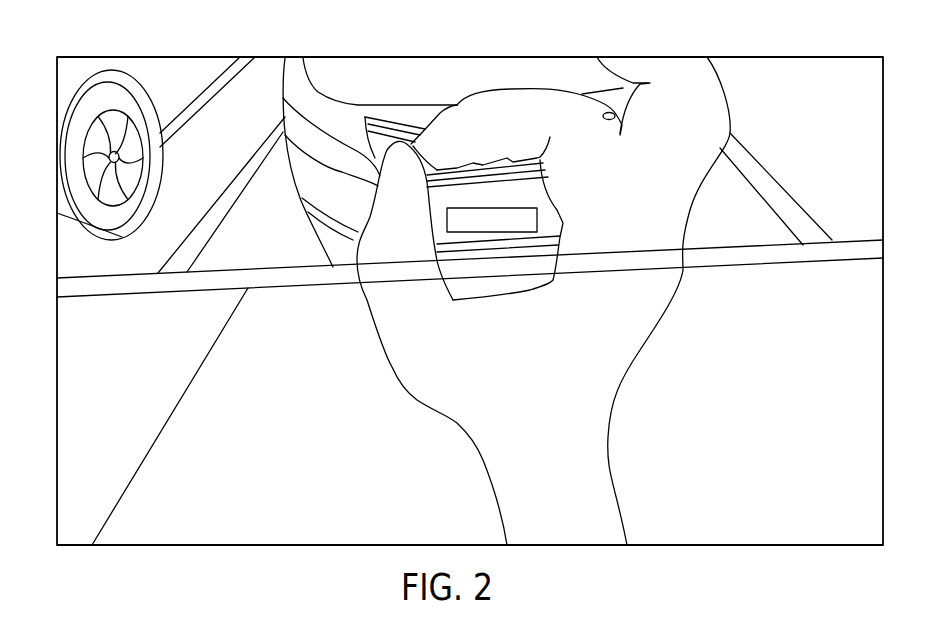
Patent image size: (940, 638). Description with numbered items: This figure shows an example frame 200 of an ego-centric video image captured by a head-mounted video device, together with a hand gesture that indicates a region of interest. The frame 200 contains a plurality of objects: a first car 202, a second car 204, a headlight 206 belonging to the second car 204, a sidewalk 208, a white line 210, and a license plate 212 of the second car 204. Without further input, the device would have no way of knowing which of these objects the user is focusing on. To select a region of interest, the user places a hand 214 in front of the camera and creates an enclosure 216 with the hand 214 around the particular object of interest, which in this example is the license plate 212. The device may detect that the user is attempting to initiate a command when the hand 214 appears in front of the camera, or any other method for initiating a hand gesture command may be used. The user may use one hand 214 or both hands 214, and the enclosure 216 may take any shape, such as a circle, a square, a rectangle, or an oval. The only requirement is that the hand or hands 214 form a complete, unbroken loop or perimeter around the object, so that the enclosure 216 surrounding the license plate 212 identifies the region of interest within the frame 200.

The frame 200 is at (837, 58).
The first car 202 is at (128, 80).
The second car 204 is at (340, 77).
The headlight 206 is at (295, 75).
The sidewalk 208 is at (866, 308).
The white line 210 is at (742, 158).
The license plate 212 is at (478, 208).
The hand 214 is at (652, 71).
The enclosure 216 is at (447, 143).